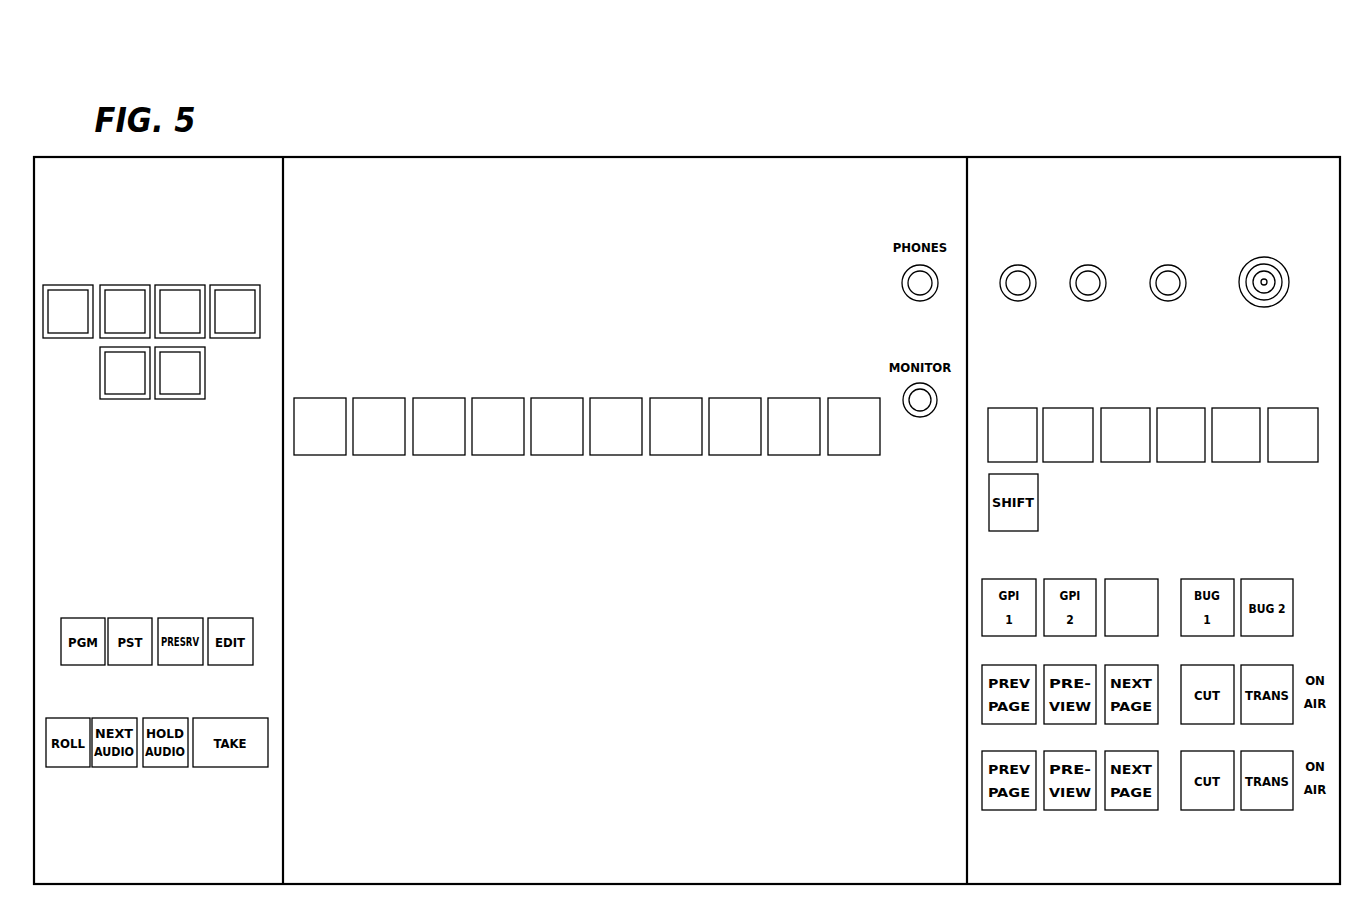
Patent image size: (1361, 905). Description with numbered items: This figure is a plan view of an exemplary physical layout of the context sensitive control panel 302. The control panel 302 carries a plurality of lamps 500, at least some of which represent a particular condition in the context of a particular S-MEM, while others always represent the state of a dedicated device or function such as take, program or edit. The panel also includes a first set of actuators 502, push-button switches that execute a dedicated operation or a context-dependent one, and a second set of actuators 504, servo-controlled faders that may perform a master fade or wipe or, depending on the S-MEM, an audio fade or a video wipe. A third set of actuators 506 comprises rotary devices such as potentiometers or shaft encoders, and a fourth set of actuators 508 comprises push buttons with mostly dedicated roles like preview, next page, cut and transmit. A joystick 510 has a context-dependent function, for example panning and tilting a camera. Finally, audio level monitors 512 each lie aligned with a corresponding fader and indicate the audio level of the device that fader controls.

The control panel 302 is at (746, 156).
The lamps 500 is at (272, 270).
The first set of actuators 502 is at (880, 270).
The second set of actuators 504 is at (916, 812).
The third set of actuators 506 is at (1202, 229).
The fourth set of actuators 508 is at (1330, 400).
The joystick 510 is at (1264, 256).
The audio level monitors 512 is at (882, 518).